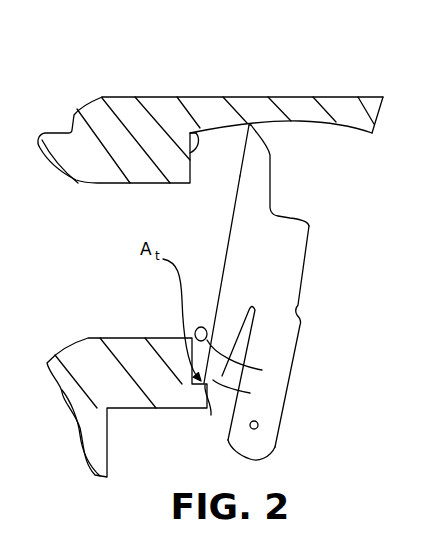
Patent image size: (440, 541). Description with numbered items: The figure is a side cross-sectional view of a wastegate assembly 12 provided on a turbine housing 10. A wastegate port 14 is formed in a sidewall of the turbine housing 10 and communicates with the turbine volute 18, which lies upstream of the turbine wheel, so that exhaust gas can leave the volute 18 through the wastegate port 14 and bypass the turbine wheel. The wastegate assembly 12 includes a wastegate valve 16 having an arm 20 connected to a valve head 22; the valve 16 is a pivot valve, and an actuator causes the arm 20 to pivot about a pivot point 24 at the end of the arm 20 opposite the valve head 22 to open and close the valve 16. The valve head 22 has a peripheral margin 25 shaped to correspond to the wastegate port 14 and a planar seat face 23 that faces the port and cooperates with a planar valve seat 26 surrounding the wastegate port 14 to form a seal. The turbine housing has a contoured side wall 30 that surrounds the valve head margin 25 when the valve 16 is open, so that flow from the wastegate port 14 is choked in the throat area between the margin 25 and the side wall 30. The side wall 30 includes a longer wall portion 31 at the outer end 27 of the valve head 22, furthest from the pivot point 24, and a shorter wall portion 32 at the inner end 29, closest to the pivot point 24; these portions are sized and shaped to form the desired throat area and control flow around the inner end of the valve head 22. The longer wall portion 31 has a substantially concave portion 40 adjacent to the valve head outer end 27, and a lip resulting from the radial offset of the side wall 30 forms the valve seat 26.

The turbine housing 10 is at (127, 107).
The wastegate assembly 12 is at (289, 292).
The wastegate port 14 is at (152, 200).
The wastegate valve 16 is at (257, 245).
The turbine volute 18 is at (90, 256).
The arm 20 is at (277, 350).
The valve head 22 is at (253, 202).
The seat face 23 is at (262, 370).
The pivot point 24 is at (259, 426).
The valve head margin 25 is at (291, 153).
The valve seat 26 is at (197, 127).
The outer end 27 is at (249, 132).
The inner end 29 is at (250, 393).
The contoured side wall 30 is at (282, 108).
The longer wall portion 31 is at (352, 100).
The shorter wall portion 32 is at (211, 415).
The concave portion 40 is at (332, 127).